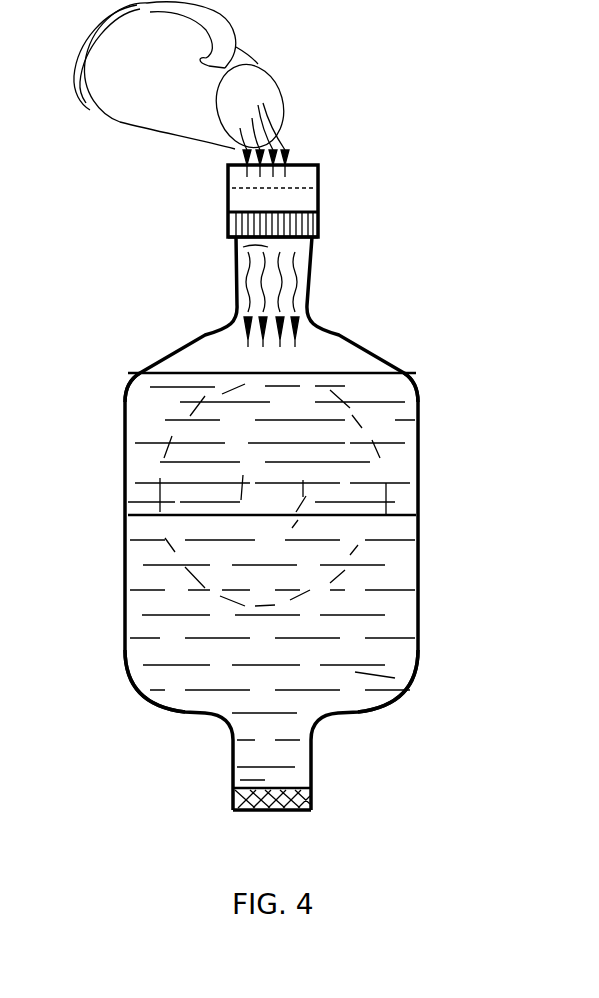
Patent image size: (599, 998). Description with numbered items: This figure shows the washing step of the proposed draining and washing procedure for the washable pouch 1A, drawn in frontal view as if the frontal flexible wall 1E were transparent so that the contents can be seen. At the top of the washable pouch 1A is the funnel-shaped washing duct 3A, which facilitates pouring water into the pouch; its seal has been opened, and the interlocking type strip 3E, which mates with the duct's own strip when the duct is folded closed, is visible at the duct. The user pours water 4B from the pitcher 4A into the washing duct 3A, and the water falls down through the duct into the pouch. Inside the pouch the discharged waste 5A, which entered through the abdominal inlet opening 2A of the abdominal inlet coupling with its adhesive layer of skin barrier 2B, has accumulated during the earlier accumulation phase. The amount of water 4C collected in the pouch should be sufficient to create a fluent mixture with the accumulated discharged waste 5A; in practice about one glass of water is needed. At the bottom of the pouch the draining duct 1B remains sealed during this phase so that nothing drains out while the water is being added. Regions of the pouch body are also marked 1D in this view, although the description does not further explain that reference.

The washable pouch 1A is at (128, 608).
The draining duct 1B is at (233, 783).
The rounded corner 1D is at (130, 407).
The frontal flexible wall 1E is at (313, 805).
The abdominal inlet opening 2A is at (160, 483).
The adhesive layer of skin barrier 2B is at (128, 505).
The washing duct 3A is at (238, 248).
The interlocking type strip 3E is at (232, 218).
The pitcher 4A is at (151, 77).
The water 4B is at (284, 138).
The amount of water in the washable pouch 4C is at (420, 427).
The discharged waste 5A is at (397, 677).